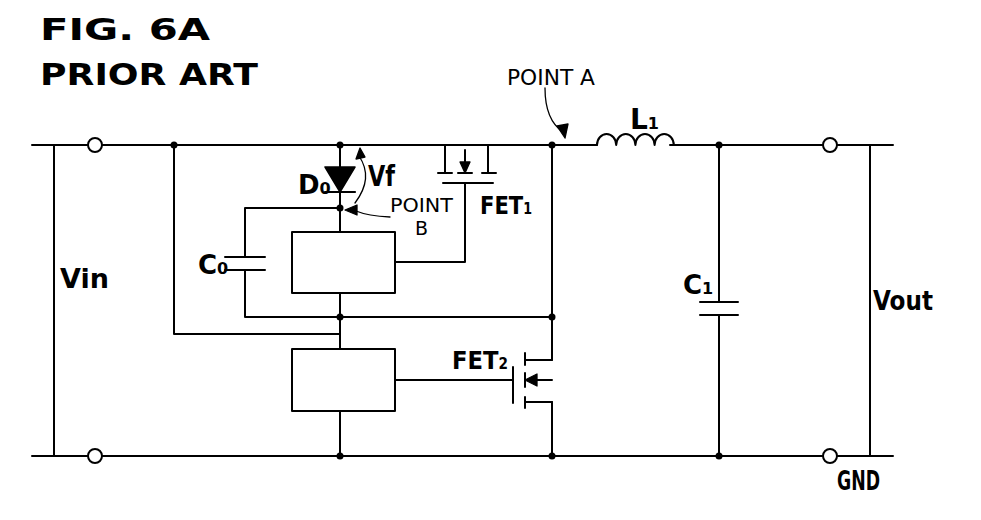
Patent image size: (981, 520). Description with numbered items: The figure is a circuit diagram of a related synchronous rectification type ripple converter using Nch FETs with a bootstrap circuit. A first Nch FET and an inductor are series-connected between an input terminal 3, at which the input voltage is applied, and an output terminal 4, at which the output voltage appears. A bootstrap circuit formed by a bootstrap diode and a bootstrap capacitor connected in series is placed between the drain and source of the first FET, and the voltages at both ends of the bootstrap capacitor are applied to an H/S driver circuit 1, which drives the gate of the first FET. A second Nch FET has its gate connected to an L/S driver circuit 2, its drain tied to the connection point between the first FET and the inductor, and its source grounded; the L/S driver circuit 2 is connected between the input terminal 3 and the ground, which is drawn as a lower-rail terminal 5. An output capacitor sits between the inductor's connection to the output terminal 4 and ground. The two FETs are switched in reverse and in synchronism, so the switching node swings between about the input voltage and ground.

The H/S driver circuit 1 is at (396, 281).
The L/S driver circuit 2 is at (305, 412).
The input terminal 3 is at (100, 139).
The output terminal 4 is at (835, 139).
The ground terminal 5 is at (90, 463).